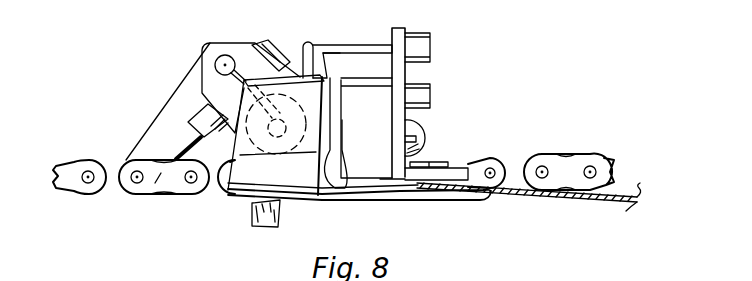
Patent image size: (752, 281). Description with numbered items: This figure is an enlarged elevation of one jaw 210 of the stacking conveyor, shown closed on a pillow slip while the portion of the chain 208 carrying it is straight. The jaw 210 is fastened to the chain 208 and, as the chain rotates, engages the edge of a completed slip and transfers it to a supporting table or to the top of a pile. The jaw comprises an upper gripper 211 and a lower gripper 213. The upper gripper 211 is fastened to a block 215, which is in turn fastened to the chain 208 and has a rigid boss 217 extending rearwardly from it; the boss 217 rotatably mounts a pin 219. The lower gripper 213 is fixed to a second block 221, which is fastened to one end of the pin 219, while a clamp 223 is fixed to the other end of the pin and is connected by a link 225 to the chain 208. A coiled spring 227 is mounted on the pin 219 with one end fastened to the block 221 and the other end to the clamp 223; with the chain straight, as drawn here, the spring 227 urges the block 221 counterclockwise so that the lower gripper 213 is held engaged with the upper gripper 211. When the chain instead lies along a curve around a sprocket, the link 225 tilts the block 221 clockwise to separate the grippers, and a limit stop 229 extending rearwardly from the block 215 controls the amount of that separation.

The chain 208 is at (513, 162).
The jaw 210 is at (449, 106).
The upper gripper 211 is at (445, 163).
The lower gripper 213 is at (450, 197).
The block 215 is at (390, 163).
The boss 217 is at (326, 182).
The pin 219 is at (260, 112).
The block 221 is at (257, 179).
The clamp 223 is at (245, 51).
The link 225 is at (147, 137).
The coiled spring 227 is at (288, 72).
The limit stop 229 is at (371, 45).